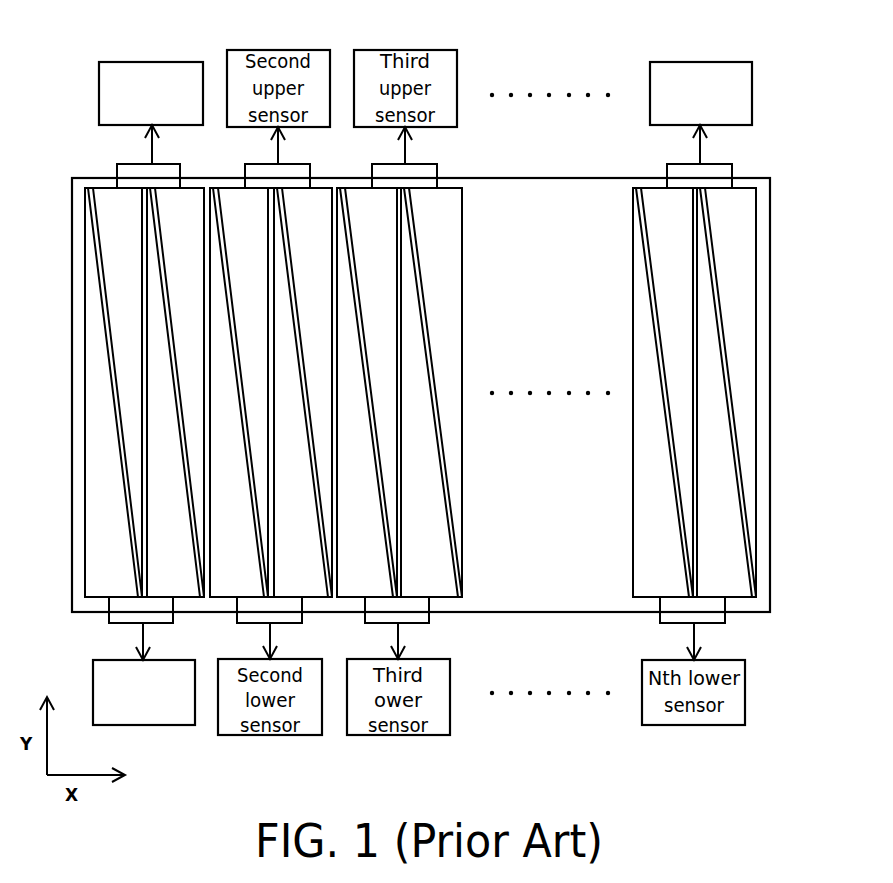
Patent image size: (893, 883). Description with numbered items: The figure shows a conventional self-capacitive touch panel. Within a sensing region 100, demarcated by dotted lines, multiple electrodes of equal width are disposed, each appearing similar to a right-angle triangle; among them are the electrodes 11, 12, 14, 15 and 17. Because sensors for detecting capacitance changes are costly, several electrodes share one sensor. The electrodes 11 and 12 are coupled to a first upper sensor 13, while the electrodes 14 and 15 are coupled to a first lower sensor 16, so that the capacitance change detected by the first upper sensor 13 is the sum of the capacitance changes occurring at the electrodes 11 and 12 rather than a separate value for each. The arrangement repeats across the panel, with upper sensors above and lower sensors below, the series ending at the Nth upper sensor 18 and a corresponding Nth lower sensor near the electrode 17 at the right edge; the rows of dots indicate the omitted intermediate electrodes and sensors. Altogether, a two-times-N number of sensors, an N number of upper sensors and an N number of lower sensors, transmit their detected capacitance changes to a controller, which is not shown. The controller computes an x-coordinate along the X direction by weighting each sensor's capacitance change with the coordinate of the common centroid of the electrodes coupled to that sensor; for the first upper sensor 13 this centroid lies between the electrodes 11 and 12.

The sensing region 100 is at (770, 178).
The electrode 11 is at (103, 197).
The electrode 12 is at (192, 197).
The first upper sensor 13 is at (160, 62).
The electrode 14 is at (98, 588).
The electrode 15 is at (185, 588).
The first lower sensor 16 is at (175, 725).
The electrode 17 is at (745, 261).
The Nth upper sensor 18 is at (697, 62).